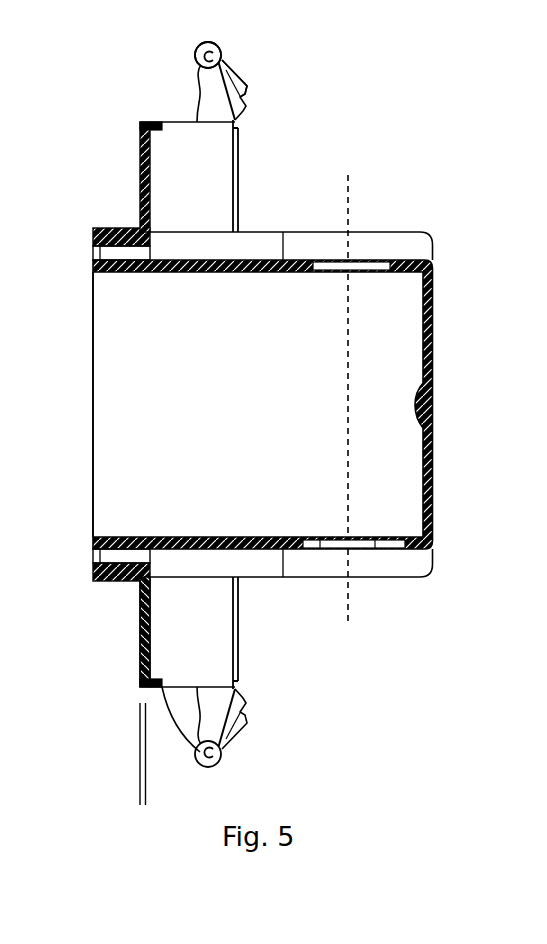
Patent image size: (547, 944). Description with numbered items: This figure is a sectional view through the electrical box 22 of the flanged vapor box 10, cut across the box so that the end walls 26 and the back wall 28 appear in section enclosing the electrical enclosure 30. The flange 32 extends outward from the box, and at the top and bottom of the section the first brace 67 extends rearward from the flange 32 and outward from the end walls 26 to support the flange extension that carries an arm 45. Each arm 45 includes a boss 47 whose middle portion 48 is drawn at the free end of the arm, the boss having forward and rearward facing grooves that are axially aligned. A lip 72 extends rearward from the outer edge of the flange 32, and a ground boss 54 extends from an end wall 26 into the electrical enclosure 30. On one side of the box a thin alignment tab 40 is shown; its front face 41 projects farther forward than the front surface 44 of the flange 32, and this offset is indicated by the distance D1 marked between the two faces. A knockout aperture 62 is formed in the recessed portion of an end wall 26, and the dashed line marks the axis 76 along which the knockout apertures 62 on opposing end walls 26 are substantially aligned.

The container 10 is at (6, 237).
The electrical box 22 is at (58, 152).
The end walls 26 is at (300, 260).
The back wall 28 is at (433, 305).
The electrical enclosure 30 is at (262, 428).
The flange 32 is at (150, 643).
The alignment tabs 40 is at (140, 603).
The front face 41 is at (143, 642).
The front surface 44 is at (143, 622).
The arm 45 is at (216, 102).
The boss 47 is at (222, 53).
The middle portion 48 is at (238, 75).
The ground boss 54 is at (112, 272).
The knockout aperture 62 is at (363, 545).
The first brace 67 is at (206, 188).
The lip 72 is at (160, 122).
The axis 76 is at (348, 198).
The distance D1 is at (200, 768).